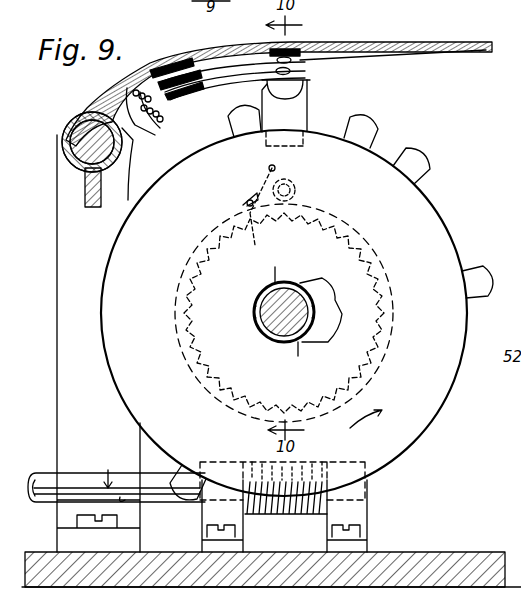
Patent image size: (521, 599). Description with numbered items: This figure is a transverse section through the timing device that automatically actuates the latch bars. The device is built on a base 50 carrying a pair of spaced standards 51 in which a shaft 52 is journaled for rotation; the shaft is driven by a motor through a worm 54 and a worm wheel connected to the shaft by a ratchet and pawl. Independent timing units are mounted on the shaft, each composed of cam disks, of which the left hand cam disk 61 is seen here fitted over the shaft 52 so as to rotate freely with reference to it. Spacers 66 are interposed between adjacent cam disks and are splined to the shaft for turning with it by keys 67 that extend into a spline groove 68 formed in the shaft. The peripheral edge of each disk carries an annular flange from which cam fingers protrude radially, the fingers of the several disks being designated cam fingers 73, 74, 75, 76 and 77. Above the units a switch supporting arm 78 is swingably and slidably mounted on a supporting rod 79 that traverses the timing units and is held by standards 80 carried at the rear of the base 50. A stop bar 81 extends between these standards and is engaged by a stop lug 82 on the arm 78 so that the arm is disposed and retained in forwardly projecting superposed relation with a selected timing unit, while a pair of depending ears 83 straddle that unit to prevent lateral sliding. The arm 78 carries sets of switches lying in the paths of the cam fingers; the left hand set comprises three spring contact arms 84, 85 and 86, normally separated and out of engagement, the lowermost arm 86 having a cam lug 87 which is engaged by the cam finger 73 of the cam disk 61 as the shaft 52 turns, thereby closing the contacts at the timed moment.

The base 50 is at (412, 548).
The standards 51 is at (500, 445).
The shaft 52 is at (268, 334).
The worm 54 is at (285, 508).
The cam disk 61 is at (405, 215).
The spacers 66 is at (313, 282).
The keys 67 is at (255, 313).
The spline groove 68 is at (289, 307).
The cam finger 73 is at (232, 121).
The cam finger 74 is at (372, 121).
The cam finger 75 is at (425, 164).
The cam finger 76 is at (485, 272).
The cam finger 77 is at (188, 500).
The switch supporting arm 78 is at (393, 52).
The supporting rod 79 is at (72, 142).
The standards 80 is at (57, 398).
The stop bar 81 is at (92, 207).
The stop lug 82 is at (128, 178).
The depending ears 83 is at (292, 115).
The spring contact arm 84 is at (300, 44).
The spring contact arm 85 is at (315, 58).
The spring contact arm 86 is at (305, 72).
The cam lug 87 is at (292, 88).